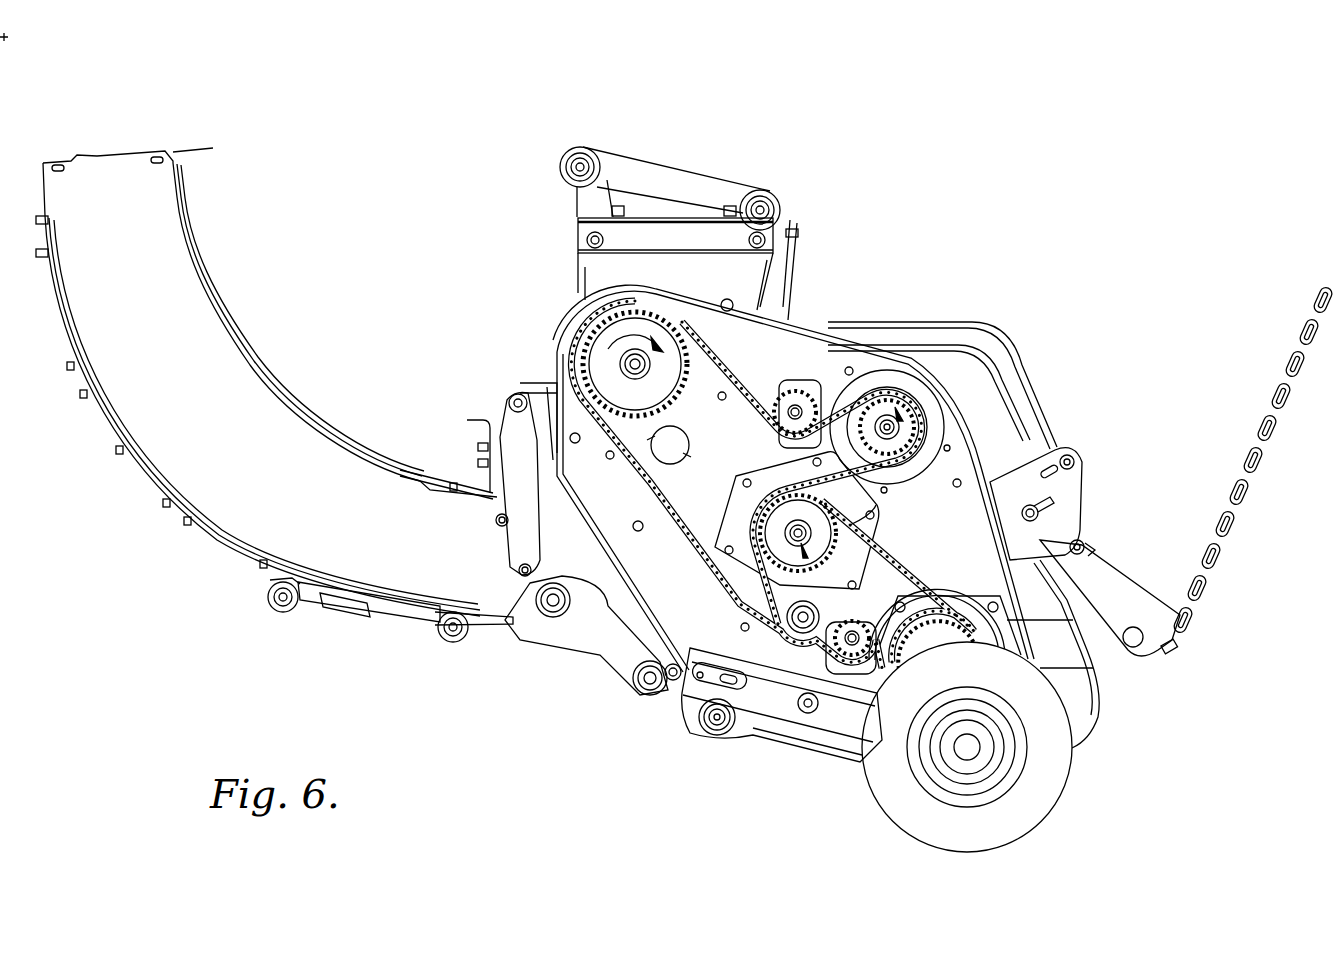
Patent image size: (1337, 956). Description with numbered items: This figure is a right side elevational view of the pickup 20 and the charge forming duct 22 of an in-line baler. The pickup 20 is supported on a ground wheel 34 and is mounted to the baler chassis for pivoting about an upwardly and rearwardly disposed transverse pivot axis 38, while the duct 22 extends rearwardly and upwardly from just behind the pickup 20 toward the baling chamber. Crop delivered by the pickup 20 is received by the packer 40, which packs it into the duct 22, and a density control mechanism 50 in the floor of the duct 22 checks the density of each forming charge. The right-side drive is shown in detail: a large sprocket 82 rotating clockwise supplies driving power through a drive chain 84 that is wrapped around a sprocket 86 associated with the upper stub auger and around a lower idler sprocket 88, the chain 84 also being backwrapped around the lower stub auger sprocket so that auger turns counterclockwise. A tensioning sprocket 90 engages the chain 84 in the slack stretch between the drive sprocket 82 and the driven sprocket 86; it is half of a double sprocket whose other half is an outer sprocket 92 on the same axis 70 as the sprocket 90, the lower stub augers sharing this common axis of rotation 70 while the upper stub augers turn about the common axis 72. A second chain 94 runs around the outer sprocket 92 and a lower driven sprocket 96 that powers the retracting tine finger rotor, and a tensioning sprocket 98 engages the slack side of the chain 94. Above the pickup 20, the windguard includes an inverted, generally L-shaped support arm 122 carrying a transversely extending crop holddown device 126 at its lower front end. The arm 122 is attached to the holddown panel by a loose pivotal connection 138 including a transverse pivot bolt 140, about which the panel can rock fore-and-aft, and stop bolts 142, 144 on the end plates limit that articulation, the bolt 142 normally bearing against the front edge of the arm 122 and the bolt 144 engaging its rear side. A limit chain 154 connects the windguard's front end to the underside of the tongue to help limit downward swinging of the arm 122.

The pickup 20 is at (676, 721).
The charge forming duct 22 is at (131, 473).
The ground wheel 34 is at (1038, 823).
The transverse pivot axis 38 is at (627, 363).
The packer 40 is at (651, 171).
The density control mechanism 50 is at (336, 618).
The common axis of rotation of lower stub augers 70 is at (790, 540).
The common axis of rotation of upper stub augers 72 is at (880, 420).
The large sprocket 82 is at (603, 340).
The drive chain 84 is at (702, 350).
The sprocket 86 is at (893, 445).
The lower idler sprocket 88 is at (785, 614).
The tensioning sprocket 90 is at (783, 414).
The outer sprocket 92 is at (764, 520).
The chain 94 is at (897, 573).
The lower driven sprocket 96 is at (925, 648).
The tensioning sprocket 98 is at (858, 655).
The support arm 122 is at (995, 332).
The crop holddown device 126 is at (1157, 599).
The loose pivotal connection 138 is at (1094, 548).
The pivot bolt 140 is at (1080, 542).
The stop bolt 142 is at (1070, 456).
The stop bolt 144 is at (1028, 506).
The limit chain 154 is at (1273, 418).